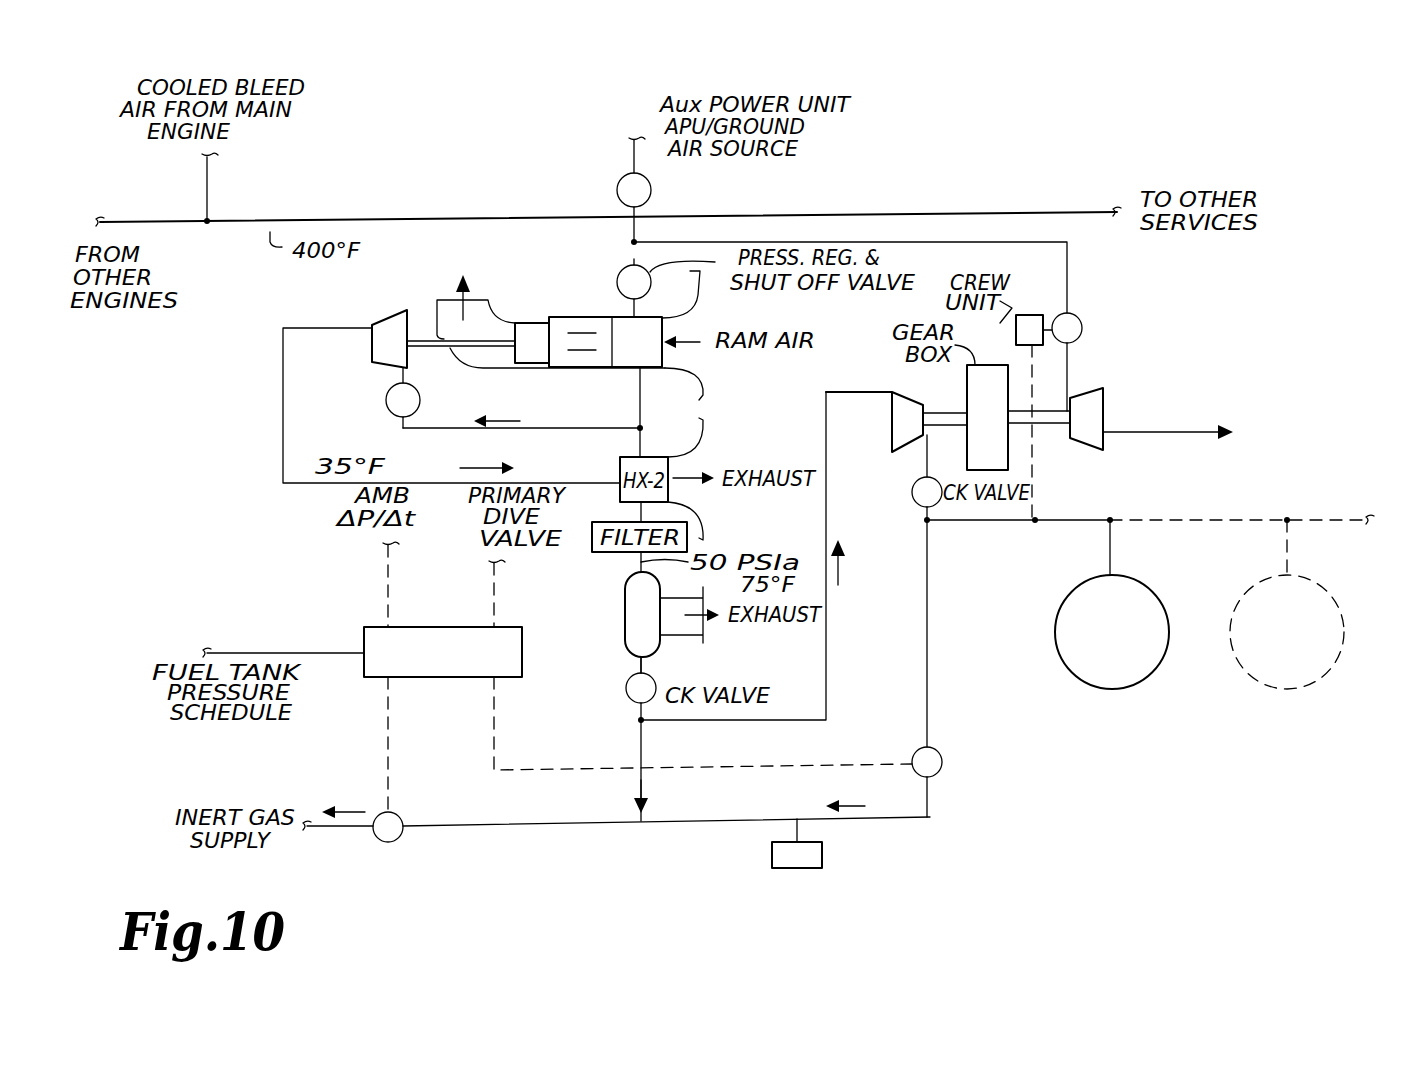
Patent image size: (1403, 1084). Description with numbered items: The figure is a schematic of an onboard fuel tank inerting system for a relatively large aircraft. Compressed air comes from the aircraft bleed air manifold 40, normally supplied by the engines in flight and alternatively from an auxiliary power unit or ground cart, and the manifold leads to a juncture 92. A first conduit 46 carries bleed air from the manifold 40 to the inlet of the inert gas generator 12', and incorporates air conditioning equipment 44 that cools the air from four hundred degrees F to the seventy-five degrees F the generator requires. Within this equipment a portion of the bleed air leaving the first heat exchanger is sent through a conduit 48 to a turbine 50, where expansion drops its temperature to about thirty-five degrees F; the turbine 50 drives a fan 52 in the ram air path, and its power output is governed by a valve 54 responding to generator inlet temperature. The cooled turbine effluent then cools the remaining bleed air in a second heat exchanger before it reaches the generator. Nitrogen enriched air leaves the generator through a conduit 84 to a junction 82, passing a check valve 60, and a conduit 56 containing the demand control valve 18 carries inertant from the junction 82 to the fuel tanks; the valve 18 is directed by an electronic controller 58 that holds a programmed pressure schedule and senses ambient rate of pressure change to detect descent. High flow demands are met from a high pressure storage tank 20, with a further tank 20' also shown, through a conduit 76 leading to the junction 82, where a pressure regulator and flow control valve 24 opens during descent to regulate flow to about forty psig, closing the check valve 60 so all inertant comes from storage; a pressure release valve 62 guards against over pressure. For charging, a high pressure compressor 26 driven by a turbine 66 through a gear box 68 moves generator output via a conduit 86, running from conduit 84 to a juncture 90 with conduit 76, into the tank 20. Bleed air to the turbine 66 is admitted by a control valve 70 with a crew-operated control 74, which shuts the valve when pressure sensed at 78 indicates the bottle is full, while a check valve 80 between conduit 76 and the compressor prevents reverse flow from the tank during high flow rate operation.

The inert gas generator 12' is at (611, 614).
The demand control valve 18 is at (400, 814).
The high pressure storage tank 20 is at (1079, 604).
The high pressure storage tank 20' is at (1269, 615).
The pressure regulator and flow control valve 24 is at (943, 772).
The high pressure compressor 26 is at (906, 400).
The bleed air manifold 40 is at (236, 223).
The air conditioning equipment 44 is at (275, 441).
The first conduit 46 is at (634, 227).
The conduit 48 is at (428, 430).
The turbine 50 is at (368, 325).
The fan 52 is at (528, 323).
The valve 54 is at (386, 399).
The conduit 56 is at (462, 824).
The electronic controller 58 is at (364, 630).
The check valve 60 is at (641, 712).
The pressure release valve 62 is at (787, 868).
The turbine 66 is at (1104, 393).
The gear box 68 is at (1005, 458).
The control valve 70 is at (1083, 322).
The crew-operated control 74 is at (1030, 315).
The conduit 76 is at (990, 525).
The pressure sensing point 78 is at (1040, 520).
The check valve 80 is at (911, 492).
The junction 82 is at (652, 826).
The conduit 84 is at (640, 662).
The conduit 86 is at (828, 676).
The juncture 90 is at (925, 521).
The juncture 92 is at (640, 243).